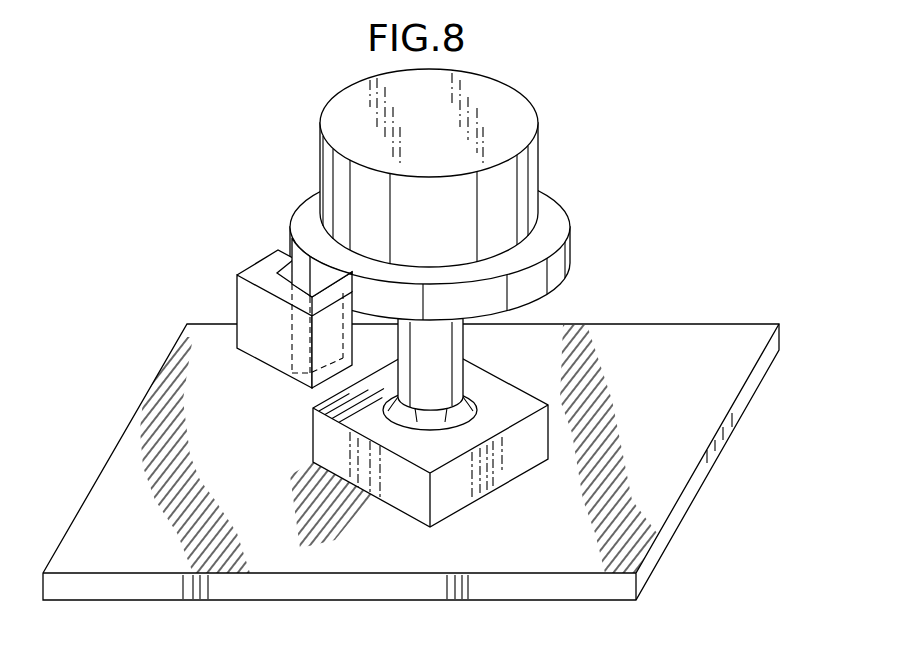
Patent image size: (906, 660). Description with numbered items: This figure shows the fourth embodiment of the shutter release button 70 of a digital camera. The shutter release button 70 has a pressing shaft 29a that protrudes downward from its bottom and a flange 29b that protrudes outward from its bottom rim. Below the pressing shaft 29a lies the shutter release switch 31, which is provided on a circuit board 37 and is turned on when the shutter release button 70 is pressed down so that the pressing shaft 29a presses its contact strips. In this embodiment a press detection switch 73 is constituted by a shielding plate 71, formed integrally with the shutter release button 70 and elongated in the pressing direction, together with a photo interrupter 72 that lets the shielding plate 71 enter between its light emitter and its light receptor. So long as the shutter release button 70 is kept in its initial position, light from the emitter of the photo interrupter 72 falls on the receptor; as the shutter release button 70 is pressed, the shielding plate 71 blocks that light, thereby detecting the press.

The shutter release button 70 is at (505, 105).
The pressing shaft 29a is at (453, 343).
The flange 29b is at (558, 214).
The shutter release switch 31 is at (520, 455).
The circuit board 37 is at (670, 340).
The shielding plate 71 is at (296, 237).
The photo interrupter 72 is at (255, 305).
The press detection switch 73 is at (249, 276).